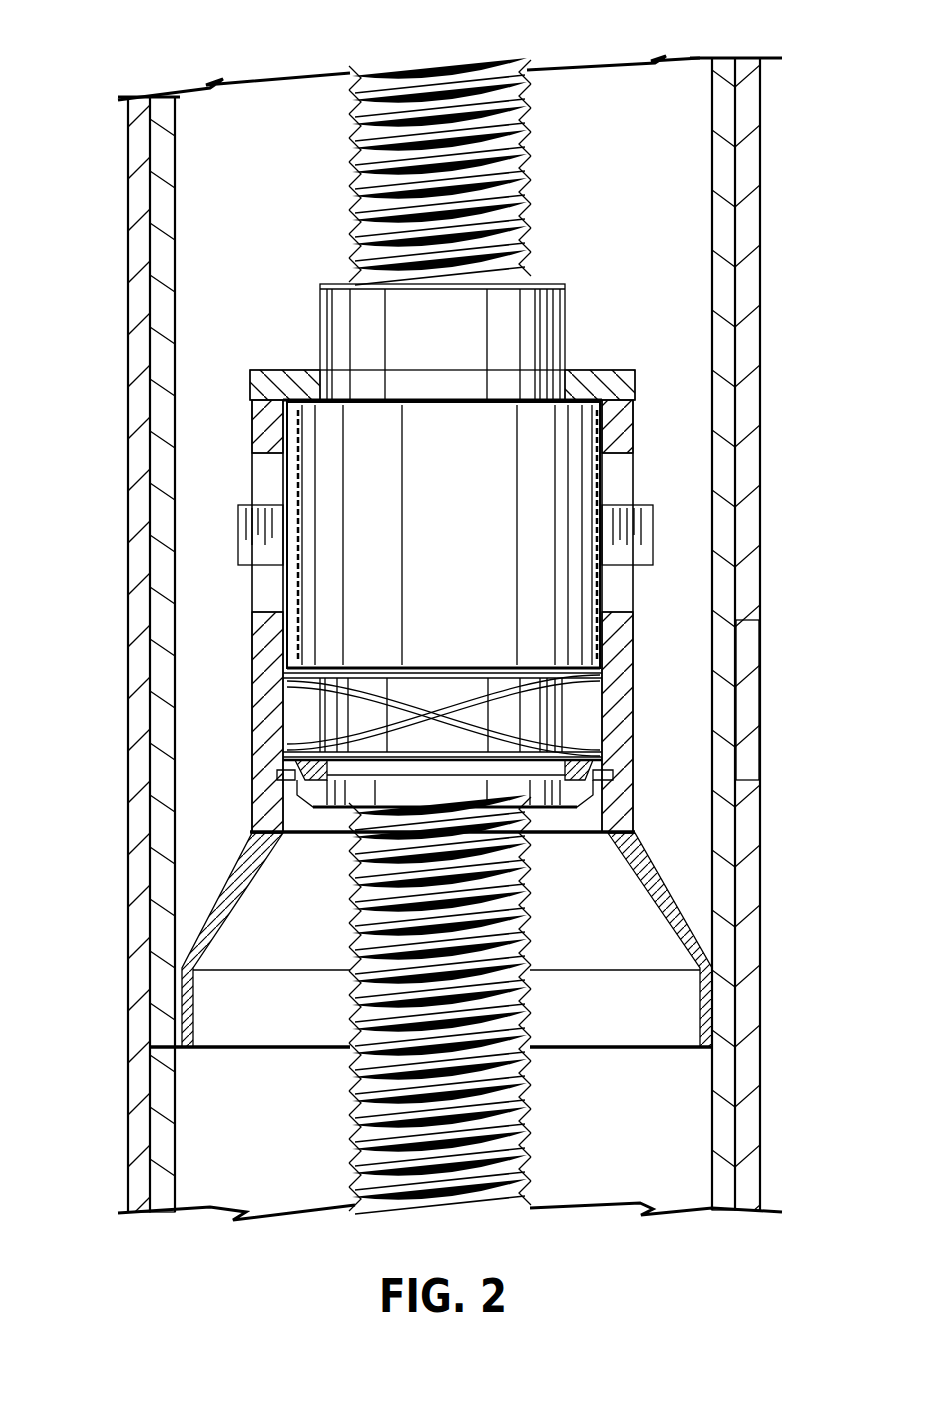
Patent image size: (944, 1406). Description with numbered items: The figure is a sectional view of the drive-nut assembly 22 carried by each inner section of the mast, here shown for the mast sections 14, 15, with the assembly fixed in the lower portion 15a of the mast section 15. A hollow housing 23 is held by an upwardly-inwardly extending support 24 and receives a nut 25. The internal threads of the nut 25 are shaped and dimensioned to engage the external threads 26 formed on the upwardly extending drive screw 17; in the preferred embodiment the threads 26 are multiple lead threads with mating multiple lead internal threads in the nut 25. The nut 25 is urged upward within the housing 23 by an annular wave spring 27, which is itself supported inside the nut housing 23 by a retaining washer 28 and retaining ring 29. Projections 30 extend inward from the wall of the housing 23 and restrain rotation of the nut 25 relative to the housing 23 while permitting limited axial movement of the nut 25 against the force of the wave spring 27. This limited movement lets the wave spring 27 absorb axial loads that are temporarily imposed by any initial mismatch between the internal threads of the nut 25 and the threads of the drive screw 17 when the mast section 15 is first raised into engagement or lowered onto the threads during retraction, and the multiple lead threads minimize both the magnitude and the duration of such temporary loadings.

The inner mast section 14 is at (133, 208).
The inner mast section 15 is at (163, 248).
The lower portion of mast section 15a is at (748, 713).
The drive screw 17 is at (427, 183).
The drive-nut assembly 22 is at (390, 586).
The housing 23 is at (623, 660).
The support 24 is at (225, 903).
The nut 25 is at (438, 518).
The external threads 26 is at (527, 201).
The annular wave spring 27 is at (473, 698).
The retaining washer 28 is at (578, 798).
The retaining ring 29 is at (608, 768).
The projections 30 is at (243, 504).